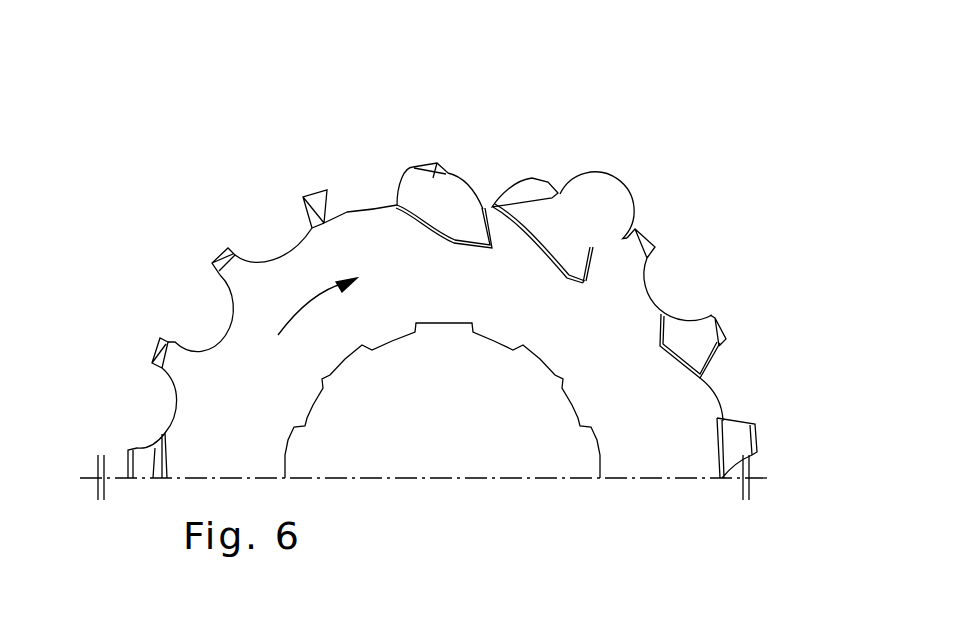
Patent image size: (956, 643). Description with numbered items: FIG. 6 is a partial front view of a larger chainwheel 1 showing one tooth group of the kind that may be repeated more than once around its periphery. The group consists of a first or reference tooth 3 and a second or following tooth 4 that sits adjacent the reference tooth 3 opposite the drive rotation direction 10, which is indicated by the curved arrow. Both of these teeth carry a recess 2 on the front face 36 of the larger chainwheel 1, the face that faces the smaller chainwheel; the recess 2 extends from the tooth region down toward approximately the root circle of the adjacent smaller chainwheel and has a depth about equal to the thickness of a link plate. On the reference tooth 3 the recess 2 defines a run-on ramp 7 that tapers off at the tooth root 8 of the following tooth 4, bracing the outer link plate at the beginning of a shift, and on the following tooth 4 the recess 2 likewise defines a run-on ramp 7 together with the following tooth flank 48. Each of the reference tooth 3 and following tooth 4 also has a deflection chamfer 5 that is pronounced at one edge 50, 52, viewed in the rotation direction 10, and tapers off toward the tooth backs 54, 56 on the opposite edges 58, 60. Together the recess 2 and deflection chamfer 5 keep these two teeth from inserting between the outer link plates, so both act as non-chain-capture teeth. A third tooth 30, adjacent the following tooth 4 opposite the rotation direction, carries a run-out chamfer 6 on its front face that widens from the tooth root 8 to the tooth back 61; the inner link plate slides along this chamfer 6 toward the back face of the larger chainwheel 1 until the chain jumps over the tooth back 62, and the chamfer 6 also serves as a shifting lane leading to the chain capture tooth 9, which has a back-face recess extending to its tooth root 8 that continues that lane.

The larger chainwheel 1 is at (625, 285).
The recess 2 is at (453, 208).
The reference tooth 3 is at (585, 228).
The following tooth 4 is at (437, 163).
The deflection chamfer 5 is at (413, 167).
The run-out chamfer 6 is at (303, 197).
The run-on ramp 7 is at (438, 228).
The tooth root 8 is at (263, 262).
The chain capture tooth 9 is at (212, 263).
The drive rotation direction 10 is at (310, 290).
The third tooth 30 is at (300, 192).
The front face 36 is at (612, 338).
The following tooth flank 48 is at (347, 203).
The edge 50 is at (563, 195).
The edge 52 is at (441, 163).
The tooth back 54 is at (557, 190).
The tooth back 56 is at (414, 168).
The opposite edge 58 is at (547, 181).
The opposite edge 60 is at (414, 169).
The tooth back 61 is at (312, 206).
The tooth back 62 is at (224, 251).